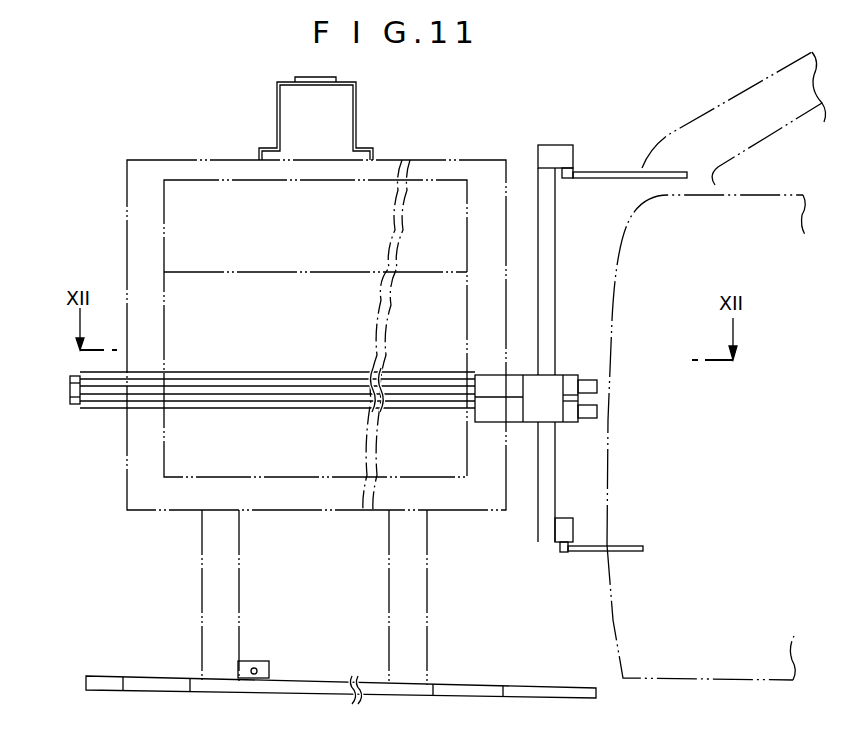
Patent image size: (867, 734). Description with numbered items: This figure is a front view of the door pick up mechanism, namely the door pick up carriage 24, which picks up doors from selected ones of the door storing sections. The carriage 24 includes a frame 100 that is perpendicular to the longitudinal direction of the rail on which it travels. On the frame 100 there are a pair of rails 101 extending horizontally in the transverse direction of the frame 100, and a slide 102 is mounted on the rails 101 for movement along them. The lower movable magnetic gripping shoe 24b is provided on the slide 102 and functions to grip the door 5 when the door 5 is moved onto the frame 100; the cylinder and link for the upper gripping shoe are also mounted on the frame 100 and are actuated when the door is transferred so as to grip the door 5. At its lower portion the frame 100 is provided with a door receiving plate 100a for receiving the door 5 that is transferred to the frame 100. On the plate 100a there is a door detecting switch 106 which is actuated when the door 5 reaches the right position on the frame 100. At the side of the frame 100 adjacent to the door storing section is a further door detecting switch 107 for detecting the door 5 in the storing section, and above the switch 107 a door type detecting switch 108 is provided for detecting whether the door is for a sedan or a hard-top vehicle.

The door pick up carriage 24 is at (122, 250).
The lower movable magnetic gripping shoe 24b is at (600, 386).
The door 5 is at (615, 268).
The frame 100 is at (160, 162).
The door receiving plate 100a is at (185, 676).
The rails 101 is at (210, 410).
The slide 102 is at (535, 405).
The door detecting switch 106 is at (260, 660).
The door detecting switch 107 is at (568, 528).
The upper bracket 108 is at (562, 155).